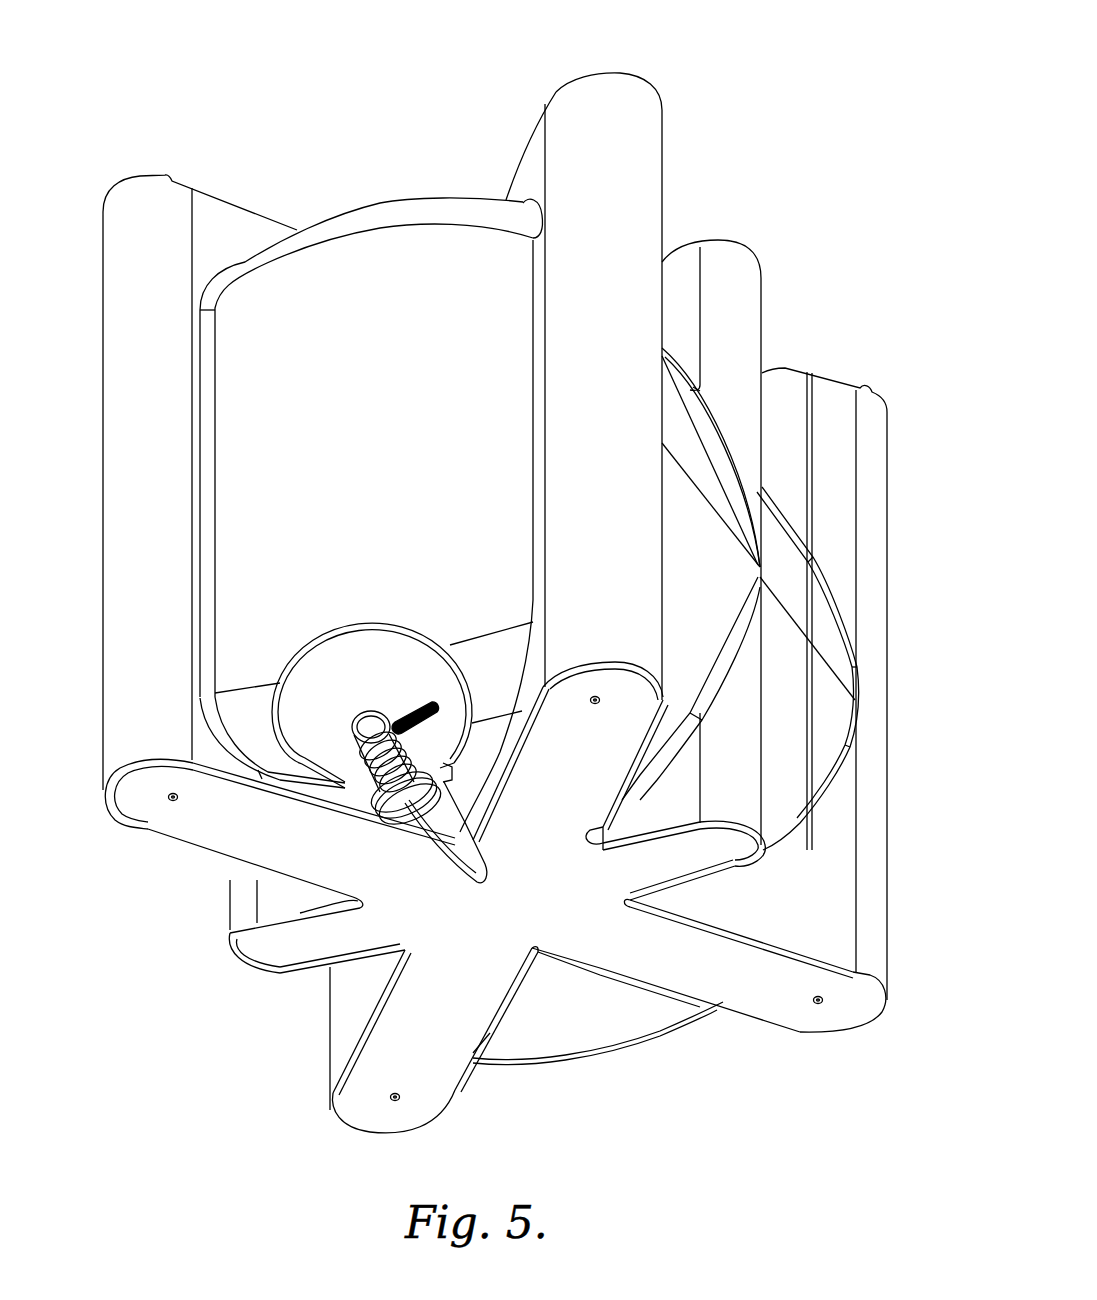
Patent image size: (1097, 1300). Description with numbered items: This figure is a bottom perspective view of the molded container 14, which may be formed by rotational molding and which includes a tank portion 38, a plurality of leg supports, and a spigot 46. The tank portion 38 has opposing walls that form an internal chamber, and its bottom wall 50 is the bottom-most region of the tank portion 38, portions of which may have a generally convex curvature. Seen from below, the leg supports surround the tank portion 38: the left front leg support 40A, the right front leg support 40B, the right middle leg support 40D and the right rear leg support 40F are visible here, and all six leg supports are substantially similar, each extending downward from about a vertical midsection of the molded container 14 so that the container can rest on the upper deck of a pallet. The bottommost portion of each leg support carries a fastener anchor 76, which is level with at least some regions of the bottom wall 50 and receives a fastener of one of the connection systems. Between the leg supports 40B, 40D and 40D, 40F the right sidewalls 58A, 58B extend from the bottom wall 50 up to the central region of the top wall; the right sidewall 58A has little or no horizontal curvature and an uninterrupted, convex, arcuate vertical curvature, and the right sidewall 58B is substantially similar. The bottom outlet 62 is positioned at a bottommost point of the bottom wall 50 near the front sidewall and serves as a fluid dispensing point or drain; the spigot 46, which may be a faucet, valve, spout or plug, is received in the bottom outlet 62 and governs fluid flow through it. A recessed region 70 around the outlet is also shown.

The molded container 14 is at (703, 62).
The tank portion 38 is at (252, 393).
The left front leg support 40A is at (98, 515).
The right front leg support 40B is at (683, 168).
The right middle leg support 40D is at (768, 305).
The right rear leg support 40F is at (895, 450).
The spigot 46 is at (374, 720).
The bottom wall 50 is at (590, 1027).
The right sidewall 58A is at (712, 581).
The right sidewall 58B is at (808, 712).
The bottom outlet 62 is at (367, 799).
The sump 70 is at (332, 692).
The fastener anchor 76 is at (168, 808).